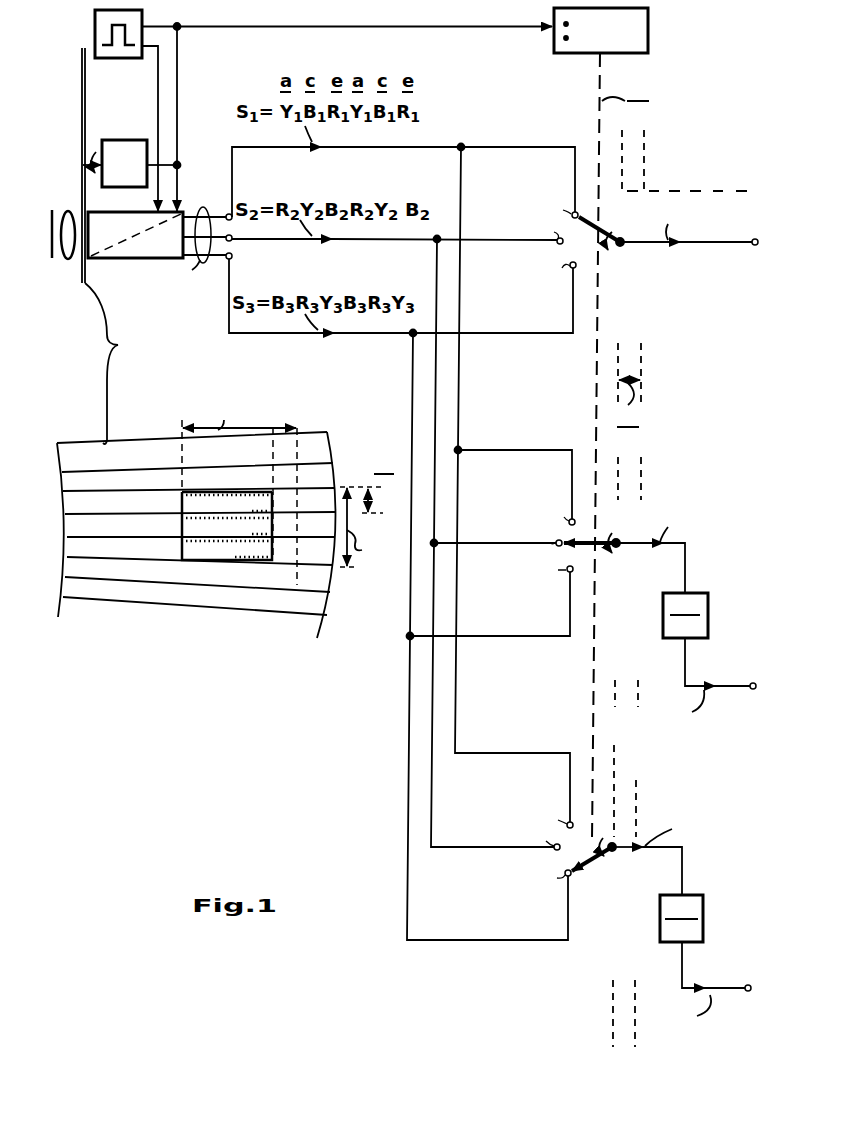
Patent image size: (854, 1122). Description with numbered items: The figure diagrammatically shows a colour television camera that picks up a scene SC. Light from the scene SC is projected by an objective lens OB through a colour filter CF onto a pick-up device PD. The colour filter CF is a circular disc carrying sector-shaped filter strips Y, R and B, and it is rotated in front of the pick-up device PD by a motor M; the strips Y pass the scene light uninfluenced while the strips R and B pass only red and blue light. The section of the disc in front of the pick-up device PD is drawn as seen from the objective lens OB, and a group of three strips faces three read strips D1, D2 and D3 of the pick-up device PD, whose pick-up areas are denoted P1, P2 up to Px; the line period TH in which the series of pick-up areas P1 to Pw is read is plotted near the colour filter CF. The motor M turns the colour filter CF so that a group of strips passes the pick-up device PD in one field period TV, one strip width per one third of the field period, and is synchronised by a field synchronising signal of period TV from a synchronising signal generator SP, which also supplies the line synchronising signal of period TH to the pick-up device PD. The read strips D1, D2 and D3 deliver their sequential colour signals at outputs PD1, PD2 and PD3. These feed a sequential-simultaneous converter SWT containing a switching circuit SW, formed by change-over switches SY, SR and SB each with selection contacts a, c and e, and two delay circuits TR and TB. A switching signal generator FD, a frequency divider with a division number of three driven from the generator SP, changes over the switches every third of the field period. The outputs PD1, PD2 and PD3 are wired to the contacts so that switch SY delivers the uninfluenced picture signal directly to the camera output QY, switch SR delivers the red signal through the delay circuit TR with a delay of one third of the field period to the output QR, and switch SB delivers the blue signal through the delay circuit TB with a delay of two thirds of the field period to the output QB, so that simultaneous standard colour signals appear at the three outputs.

The synchronising signal generator SP is at (132, 62).
The field period TV is at (182, 32).
The line period TH is at (156, 115).
The motor M is at (130, 136).
The scene SC is at (55, 210).
The objective lens OB is at (65, 260).
The pick-up device PD is at (154, 260).
The output of the pick-up device PD1 is at (224, 216).
The output of the pick-up device PD2 is at (232, 240).
The output of the pick-up device PD3 is at (232, 259).
The colour filter CF is at (196, 460).
The switching signal generator FD is at (571, 56).
The sequential-simultaneous converter SWT is at (535, 312).
The switching circuit SW is at (692, 401).
The change-over switch SY is at (623, 249).
The output QY is at (753, 248).
The change-over switch SR is at (617, 556).
The delay circuit TR is at (710, 625).
The output QR is at (751, 683).
The change-over switch SB is at (608, 868).
The delay circuit TB is at (705, 932).
The output QB is at (747, 984).
The read strip D1 is at (182, 505).
The read strip D2 is at (182, 528).
The read strip D3 is at (182, 553).
The pick-up area P1 is at (185, 494).
The pick-up area P2 is at (204, 480).
The pick-up area Pw is at (271, 493).
The pick-up area Px is at (276, 512).